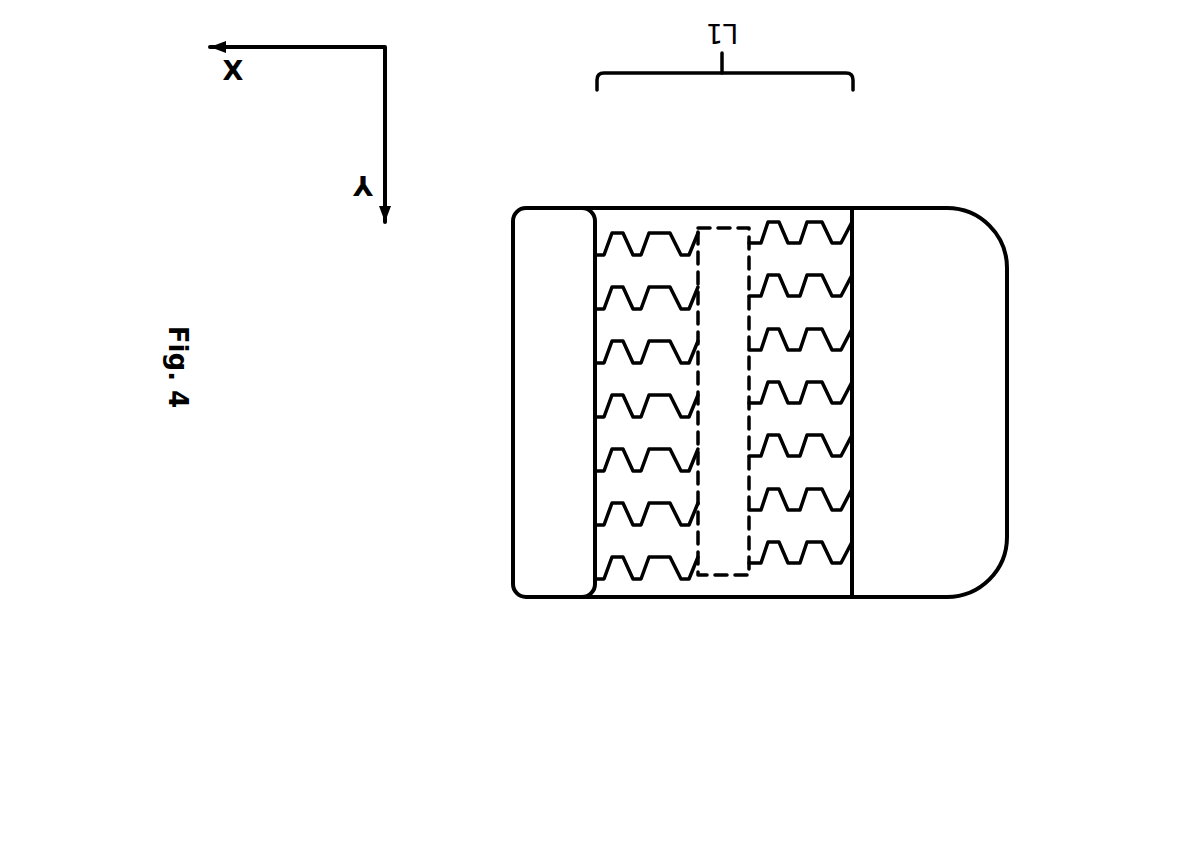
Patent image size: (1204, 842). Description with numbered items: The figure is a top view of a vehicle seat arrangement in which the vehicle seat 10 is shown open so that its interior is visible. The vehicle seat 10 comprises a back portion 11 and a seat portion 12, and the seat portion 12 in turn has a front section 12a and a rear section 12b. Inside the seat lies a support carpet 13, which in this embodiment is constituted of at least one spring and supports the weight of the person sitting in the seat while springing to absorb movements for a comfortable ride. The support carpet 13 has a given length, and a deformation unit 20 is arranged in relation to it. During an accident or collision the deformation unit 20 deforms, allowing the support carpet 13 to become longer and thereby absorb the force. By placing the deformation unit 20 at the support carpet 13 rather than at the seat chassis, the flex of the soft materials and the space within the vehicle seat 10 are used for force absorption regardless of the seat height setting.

The vehicle seat 10 is at (1048, 380).
The back portion 11 is at (552, 597).
The seat portion 12 is at (807, 222).
The front section 12a is at (913, 597).
The rear section 12b is at (698, 597).
The support carpet 13 is at (626, 235).
The deformation unit 20 is at (715, 228).